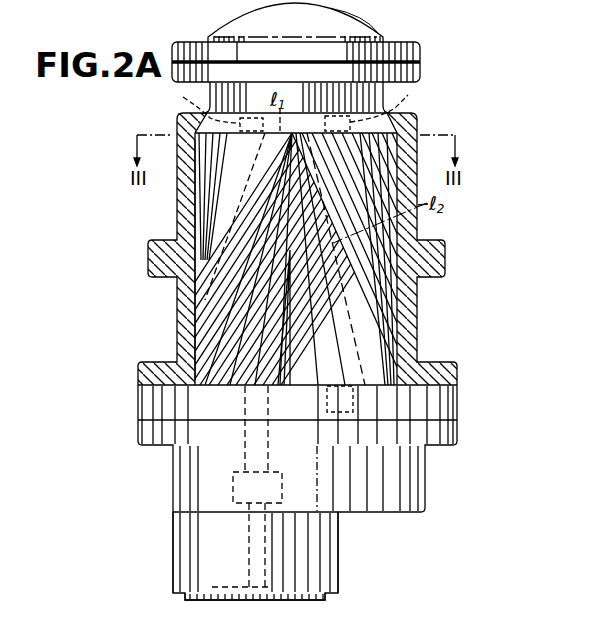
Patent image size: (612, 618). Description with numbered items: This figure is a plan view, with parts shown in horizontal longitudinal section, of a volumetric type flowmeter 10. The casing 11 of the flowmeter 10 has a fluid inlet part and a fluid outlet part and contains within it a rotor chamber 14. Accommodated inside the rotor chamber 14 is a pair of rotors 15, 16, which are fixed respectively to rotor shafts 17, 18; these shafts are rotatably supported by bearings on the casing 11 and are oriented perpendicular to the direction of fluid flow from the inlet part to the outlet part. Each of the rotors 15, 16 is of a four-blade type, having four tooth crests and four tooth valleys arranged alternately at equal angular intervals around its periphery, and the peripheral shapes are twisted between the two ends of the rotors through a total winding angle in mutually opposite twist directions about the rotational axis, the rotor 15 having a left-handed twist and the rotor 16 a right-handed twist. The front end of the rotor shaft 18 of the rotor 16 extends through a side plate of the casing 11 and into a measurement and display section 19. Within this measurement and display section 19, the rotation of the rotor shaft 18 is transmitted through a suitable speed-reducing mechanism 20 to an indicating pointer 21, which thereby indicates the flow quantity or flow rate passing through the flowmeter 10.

The volumetric type flowmeter 10 is at (408, 18).
The casing 11 is at (413, 223).
The rotor chamber 14 is at (196, 228).
The rotor 15 is at (388, 297).
The rotor 16 is at (210, 308).
The rotor shaft 17 is at (378, 108).
The rotor shaft 18 is at (245, 455).
The measurement and display section 19 is at (339, 555).
The speed-reducing mechanism 20 is at (233, 490).
The indicating pointer 21 is at (230, 587).